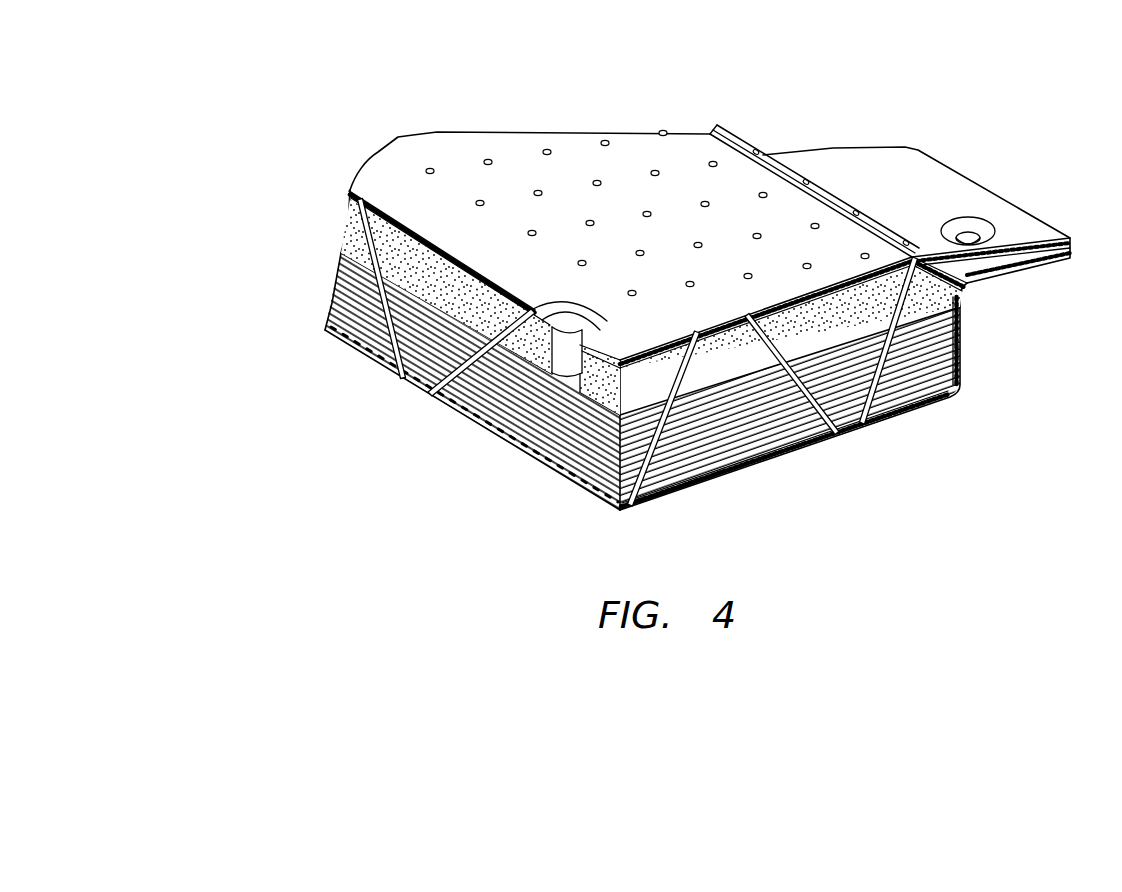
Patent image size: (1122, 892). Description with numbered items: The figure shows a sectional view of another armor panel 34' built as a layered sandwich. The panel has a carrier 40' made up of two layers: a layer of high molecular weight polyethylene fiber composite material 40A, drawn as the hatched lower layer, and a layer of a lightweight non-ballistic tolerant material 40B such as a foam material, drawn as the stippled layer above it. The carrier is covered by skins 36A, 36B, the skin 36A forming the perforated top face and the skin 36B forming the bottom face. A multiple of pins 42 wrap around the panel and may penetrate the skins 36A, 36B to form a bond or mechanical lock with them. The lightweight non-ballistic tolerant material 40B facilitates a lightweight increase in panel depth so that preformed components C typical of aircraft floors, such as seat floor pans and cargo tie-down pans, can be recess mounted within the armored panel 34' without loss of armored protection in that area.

The armor panel 34' is at (890, 155).
The skin 36A is at (570, 177).
The skin 36B is at (923, 408).
The carrier 40' is at (558, 350).
The high molecular weight polyethylene fiber composite material 40A is at (347, 310).
The lightweight non-ballistic tolerant material 40B is at (353, 227).
The pins 42 is at (460, 375).
The preformed components C is at (587, 300).